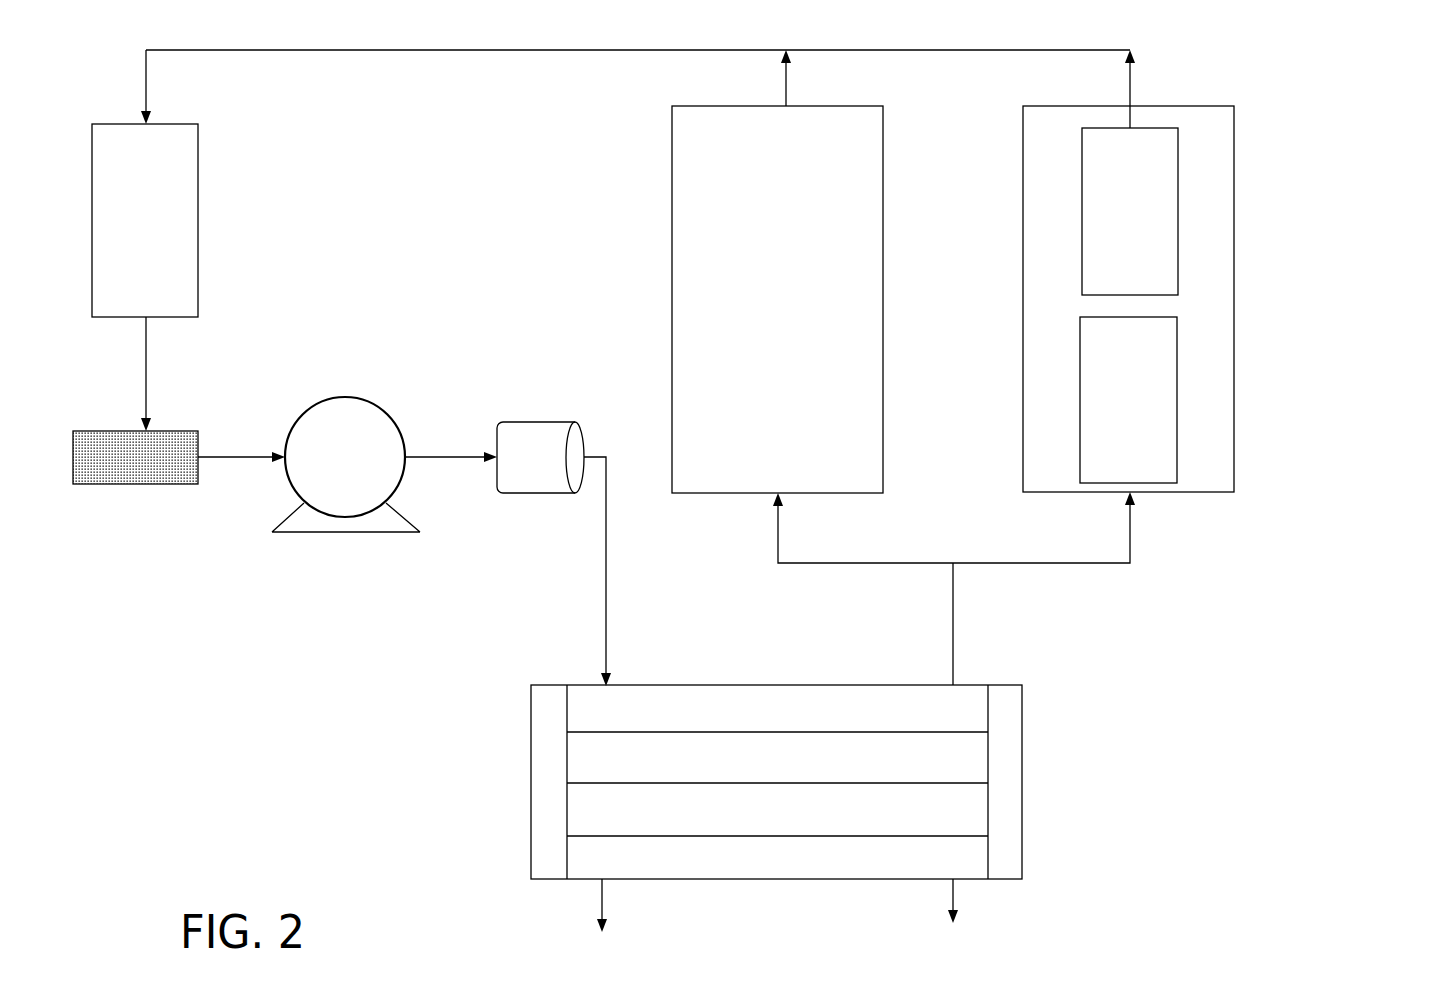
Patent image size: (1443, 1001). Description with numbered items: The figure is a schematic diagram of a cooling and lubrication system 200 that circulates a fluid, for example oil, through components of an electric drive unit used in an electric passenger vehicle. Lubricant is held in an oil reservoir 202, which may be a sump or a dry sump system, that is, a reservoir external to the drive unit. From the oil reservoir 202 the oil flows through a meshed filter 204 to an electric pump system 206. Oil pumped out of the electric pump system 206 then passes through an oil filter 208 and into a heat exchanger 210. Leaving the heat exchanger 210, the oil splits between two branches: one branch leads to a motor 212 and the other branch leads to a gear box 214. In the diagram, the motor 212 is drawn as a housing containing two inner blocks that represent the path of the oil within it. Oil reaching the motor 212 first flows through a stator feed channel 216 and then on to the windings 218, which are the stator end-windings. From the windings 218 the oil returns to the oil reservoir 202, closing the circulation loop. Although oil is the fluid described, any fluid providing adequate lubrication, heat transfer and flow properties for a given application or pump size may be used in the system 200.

The cooling and lubrication system 200 is at (1364, 65).
The oil reservoir 202 is at (165, 231).
The meshed filter 204 is at (112, 431).
The electric pump system 206 is at (364, 468).
The oil filter 208 is at (518, 422).
The heat exchanger 210 is at (1023, 780).
The motor 212 is at (1234, 106).
The gear box 214 is at (672, 106).
The stator feed channel 216 is at (1148, 411).
The windings 218 is at (1150, 222).